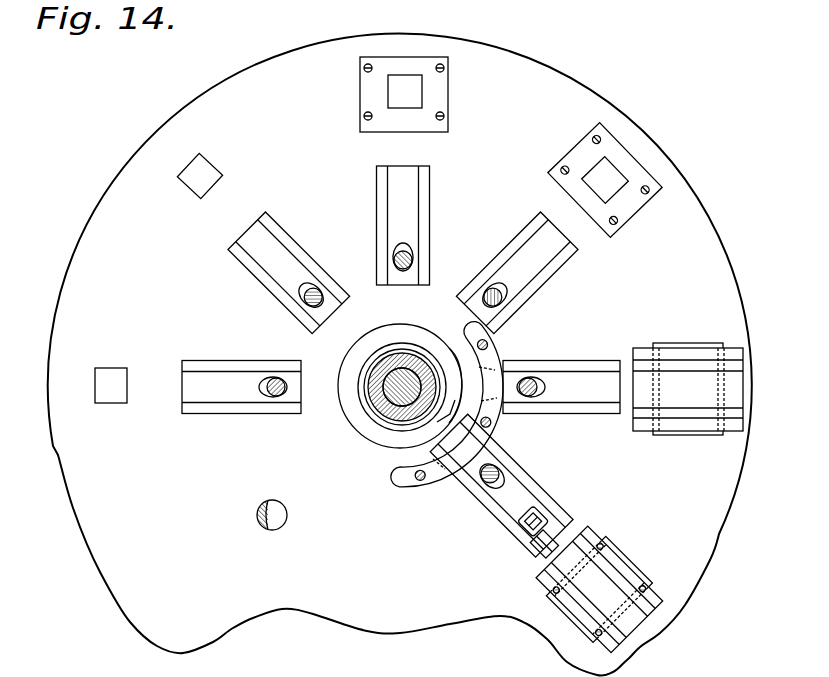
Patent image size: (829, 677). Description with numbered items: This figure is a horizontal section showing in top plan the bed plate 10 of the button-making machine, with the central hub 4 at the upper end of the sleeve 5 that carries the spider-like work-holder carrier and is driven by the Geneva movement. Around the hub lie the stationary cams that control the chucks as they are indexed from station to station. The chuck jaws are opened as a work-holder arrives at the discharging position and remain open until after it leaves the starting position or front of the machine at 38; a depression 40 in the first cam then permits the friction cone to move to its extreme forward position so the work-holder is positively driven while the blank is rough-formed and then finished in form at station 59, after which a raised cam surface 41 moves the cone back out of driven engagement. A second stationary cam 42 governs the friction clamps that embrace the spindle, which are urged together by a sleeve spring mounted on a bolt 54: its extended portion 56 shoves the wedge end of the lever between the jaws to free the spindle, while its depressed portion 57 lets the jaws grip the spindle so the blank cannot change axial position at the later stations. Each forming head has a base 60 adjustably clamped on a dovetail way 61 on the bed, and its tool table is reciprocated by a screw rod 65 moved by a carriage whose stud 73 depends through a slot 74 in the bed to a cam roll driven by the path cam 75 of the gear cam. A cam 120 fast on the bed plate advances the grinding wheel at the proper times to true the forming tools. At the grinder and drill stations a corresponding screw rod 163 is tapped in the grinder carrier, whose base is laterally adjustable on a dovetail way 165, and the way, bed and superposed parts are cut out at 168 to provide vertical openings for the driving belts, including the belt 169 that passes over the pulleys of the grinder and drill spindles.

The hub 4 is at (371, 378).
The sleeve 5 is at (403, 355).
The bed plate 10 is at (700, 505).
The starting position 38 is at (402, 642).
The depression 40 is at (457, 462).
The raised cam surface 41 is at (485, 345).
The second stationary cam 42 is at (428, 424).
The bolt 54 is at (420, 442).
The extended portion 56 is at (392, 451).
The depressed portion 57 is at (443, 352).
The station 59 is at (429, 474).
The base 60 is at (703, 398).
The dovetail way 61 is at (684, 346).
The screw rod 65 is at (606, 578).
The stud 73 is at (398, 259).
The slot 74 is at (417, 262).
The path cam 75 is at (508, 478).
The cam 120 is at (494, 412).
The screw rod 163 is at (540, 558).
The dovetail way 165 is at (442, 88).
The cut-out 168 is at (388, 89).
The driving belt 169 is at (553, 531).